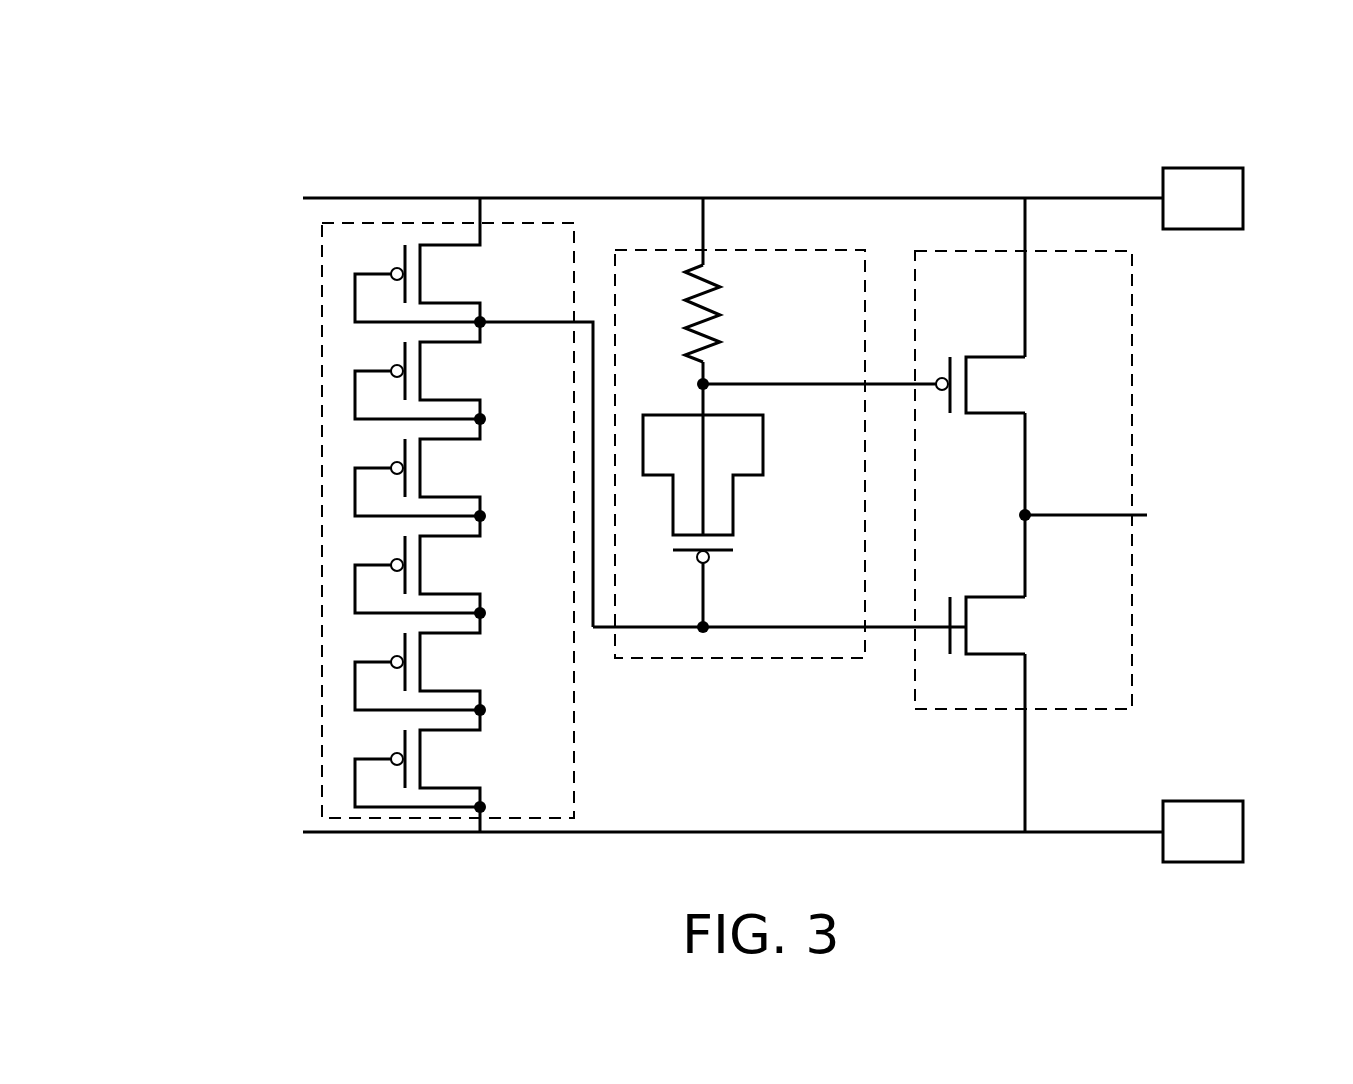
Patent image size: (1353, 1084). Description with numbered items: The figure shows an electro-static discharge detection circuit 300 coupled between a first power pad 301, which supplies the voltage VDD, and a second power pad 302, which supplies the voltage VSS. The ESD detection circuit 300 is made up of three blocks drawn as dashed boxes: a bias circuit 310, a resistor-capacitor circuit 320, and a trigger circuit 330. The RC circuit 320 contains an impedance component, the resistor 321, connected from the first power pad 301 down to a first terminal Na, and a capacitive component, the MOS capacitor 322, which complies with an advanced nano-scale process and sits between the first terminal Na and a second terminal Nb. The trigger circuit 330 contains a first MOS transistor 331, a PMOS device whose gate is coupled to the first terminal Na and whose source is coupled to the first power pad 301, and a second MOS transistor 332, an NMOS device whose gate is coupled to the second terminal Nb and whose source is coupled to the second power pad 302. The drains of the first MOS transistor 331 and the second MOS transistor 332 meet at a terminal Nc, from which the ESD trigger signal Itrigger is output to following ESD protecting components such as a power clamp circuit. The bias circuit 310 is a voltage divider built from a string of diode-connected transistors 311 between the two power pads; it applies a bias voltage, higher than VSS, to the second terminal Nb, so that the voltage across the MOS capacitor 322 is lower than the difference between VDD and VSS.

The ESD detection circuit 300 is at (283, 122).
The first power pad 301 is at (1243, 198).
The second power pad 302 is at (1243, 832).
The bias circuit 310 is at (322, 312).
The diode-connected transistor 311 is at (452, 270).
The resistor-capacitor (RC) circuit 320 is at (812, 250).
The resistor 321 is at (738, 288).
The MOS capacitor 322 is at (747, 490).
The trigger circuit 330 is at (1132, 320).
The first MOS transistor 331 is at (1022, 379).
The second MOS transistor 332 is at (1020, 620).